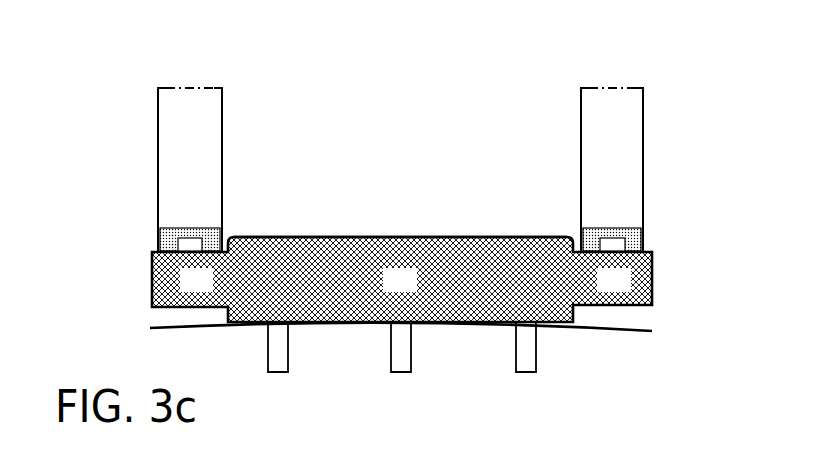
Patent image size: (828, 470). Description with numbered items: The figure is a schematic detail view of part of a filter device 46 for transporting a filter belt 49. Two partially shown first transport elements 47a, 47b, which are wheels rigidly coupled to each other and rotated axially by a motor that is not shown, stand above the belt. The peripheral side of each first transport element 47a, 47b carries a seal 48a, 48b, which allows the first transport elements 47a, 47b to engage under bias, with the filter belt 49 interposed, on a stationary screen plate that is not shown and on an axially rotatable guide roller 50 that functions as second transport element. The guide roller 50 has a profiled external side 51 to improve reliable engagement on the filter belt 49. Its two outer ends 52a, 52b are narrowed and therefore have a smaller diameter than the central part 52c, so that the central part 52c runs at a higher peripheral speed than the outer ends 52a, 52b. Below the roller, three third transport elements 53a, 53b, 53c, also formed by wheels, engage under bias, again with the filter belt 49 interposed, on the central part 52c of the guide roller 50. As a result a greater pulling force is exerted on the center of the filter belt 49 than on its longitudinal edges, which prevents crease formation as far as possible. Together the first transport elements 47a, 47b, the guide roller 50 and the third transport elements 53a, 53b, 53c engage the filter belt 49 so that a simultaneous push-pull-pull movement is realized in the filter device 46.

The filter device 46 is at (147, 53).
The first transport element 47a is at (168, 148).
The first transport element 47b is at (632, 148).
The seal 48a is at (166, 240).
The seal 48b is at (637, 242).
The filter belt 49 is at (402, 236).
The guide roller 50 is at (151, 283).
The external side 51 is at (315, 262).
The outer end 52a is at (190, 279).
The outer end 52b is at (612, 278).
The central part 52c is at (400, 279).
The third transport element 53a is at (278, 372).
The third transport element 53b is at (401, 372).
The third transport element 53c is at (526, 372).